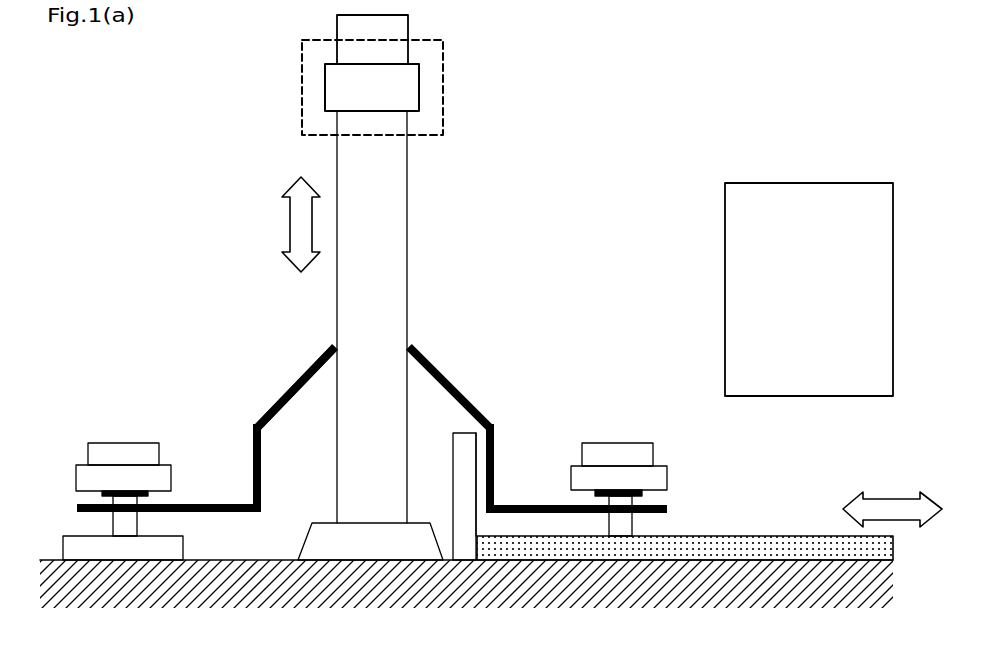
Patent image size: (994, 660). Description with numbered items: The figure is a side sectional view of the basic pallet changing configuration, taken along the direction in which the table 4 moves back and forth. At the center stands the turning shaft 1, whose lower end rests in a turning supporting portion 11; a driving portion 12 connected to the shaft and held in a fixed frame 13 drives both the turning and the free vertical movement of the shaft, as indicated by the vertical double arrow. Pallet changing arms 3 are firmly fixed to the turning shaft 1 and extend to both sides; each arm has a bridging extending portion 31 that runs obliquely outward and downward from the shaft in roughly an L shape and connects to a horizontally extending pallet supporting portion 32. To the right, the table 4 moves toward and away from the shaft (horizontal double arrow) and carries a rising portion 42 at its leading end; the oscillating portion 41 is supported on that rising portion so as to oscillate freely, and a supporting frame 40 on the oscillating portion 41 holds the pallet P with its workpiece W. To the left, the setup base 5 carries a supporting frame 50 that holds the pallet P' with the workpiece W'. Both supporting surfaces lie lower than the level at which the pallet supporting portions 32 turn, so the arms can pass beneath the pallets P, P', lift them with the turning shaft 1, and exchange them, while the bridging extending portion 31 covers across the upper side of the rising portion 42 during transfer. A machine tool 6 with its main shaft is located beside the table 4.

The turning shaft 1 is at (382, 175).
The turning supporting portion 11 is at (340, 548).
The driving portion 12 is at (387, 88).
The fixed frame 13 is at (302, 98).
The pallet changing arm 3 is at (248, 321).
The bridging extending portion 31 is at (289, 388).
The pallet supporting portion 32 is at (214, 503).
The table 4 is at (714, 519).
The supporting frame 40 is at (619, 517).
The oscillating portion 41 is at (477, 505).
The rising portion 42 is at (465, 468).
The setup base 5 is at (105, 547).
The supporting frame 50 is at (122, 521).
The machine tool 6 is at (756, 198).
The workpiece W is at (617, 404).
The workpiece W' is at (109, 404).
The pallet P is at (622, 413).
The pallet P' is at (131, 427).